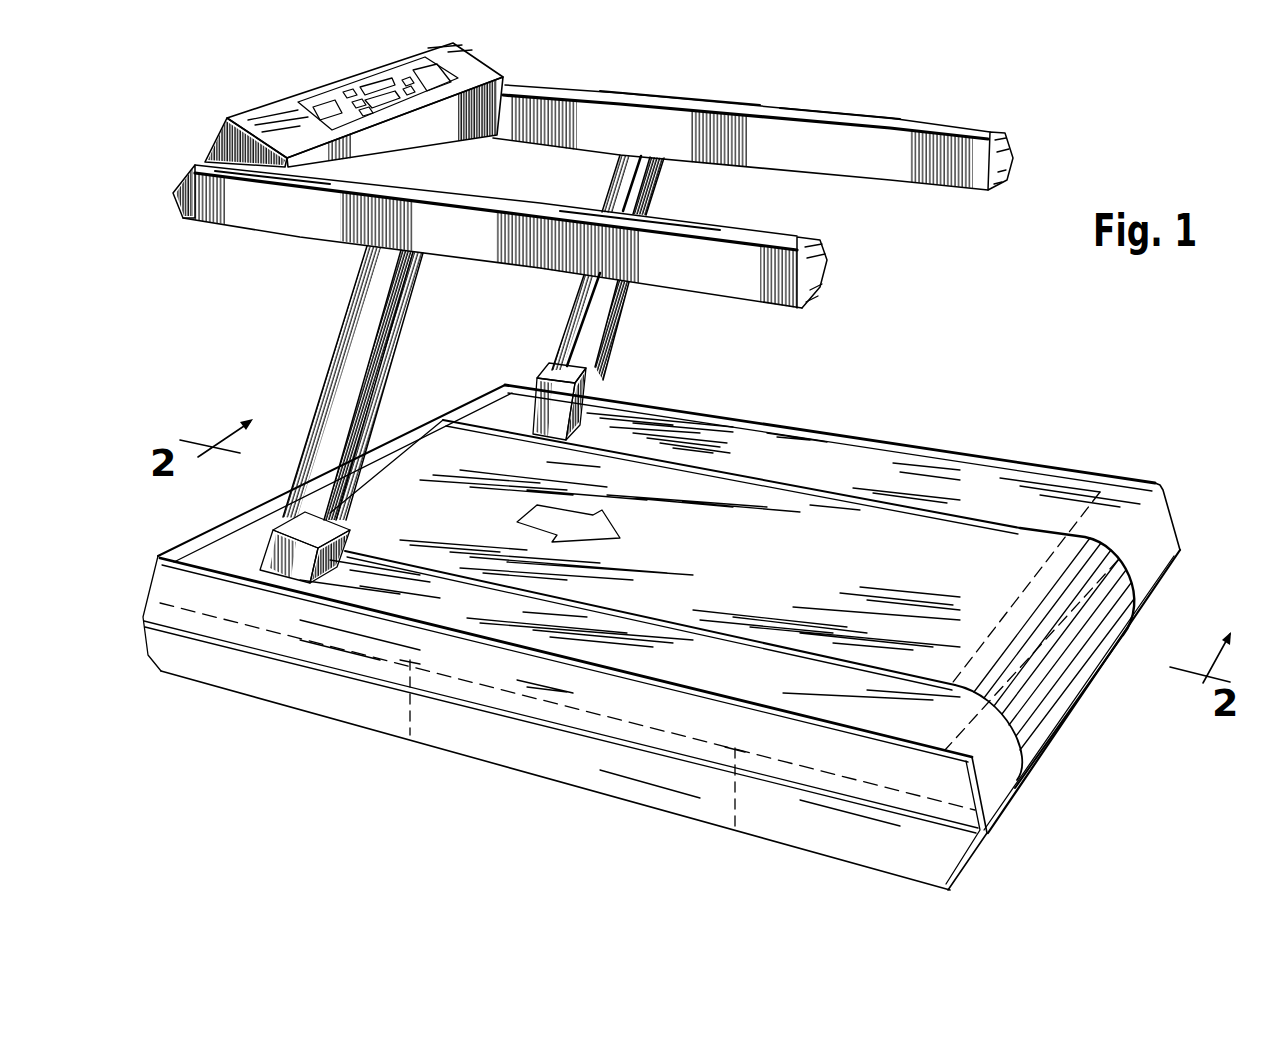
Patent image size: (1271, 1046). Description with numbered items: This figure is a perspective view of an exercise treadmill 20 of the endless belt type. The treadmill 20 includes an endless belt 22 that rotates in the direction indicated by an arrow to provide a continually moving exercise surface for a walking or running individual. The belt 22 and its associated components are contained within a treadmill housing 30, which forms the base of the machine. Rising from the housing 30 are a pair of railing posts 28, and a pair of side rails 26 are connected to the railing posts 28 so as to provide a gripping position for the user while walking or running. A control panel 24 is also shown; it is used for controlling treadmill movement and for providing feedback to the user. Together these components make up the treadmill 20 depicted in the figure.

The exercise treadmill 20 is at (932, 375).
The endless belt 22 is at (810, 567).
The control panel 24 is at (505, 74).
The side rails 26 is at (860, 122).
The railing posts 28 is at (386, 383).
The treadmill housing 30 is at (282, 678).